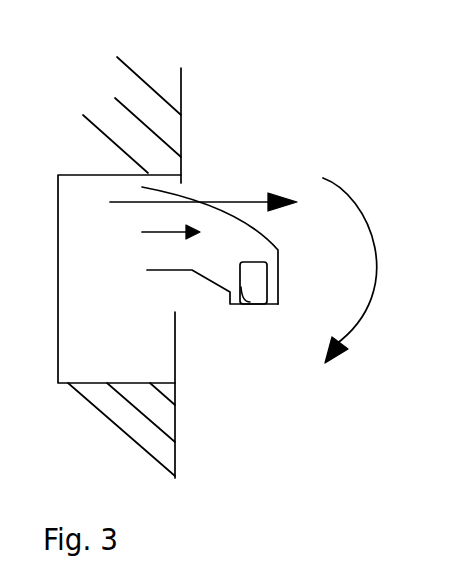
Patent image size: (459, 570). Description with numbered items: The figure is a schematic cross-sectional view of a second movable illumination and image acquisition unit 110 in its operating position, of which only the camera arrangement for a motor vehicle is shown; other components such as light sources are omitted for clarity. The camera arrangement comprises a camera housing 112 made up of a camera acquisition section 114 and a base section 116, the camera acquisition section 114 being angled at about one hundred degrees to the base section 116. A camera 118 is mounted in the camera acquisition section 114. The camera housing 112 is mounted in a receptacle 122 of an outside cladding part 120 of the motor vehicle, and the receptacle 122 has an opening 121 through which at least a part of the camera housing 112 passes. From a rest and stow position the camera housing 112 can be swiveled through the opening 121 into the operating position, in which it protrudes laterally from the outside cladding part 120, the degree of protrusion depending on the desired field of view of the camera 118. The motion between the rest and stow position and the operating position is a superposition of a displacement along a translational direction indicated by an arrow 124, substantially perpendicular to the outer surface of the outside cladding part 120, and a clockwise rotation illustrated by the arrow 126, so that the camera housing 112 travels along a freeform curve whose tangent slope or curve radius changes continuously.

The second movable illumination and image acquisition unit 110 is at (248, 211).
The camera housing 112 is at (222, 237).
The camera acquisition section 114 is at (258, 249).
The base section 116 is at (192, 271).
The camera 118 is at (255, 304).
The outside cladding part 120 is at (163, 455).
The opening 121 is at (140, 234).
The receptacle 122 is at (135, 345).
The arrow 124 is at (211, 201).
The arrow 126 is at (367, 217).